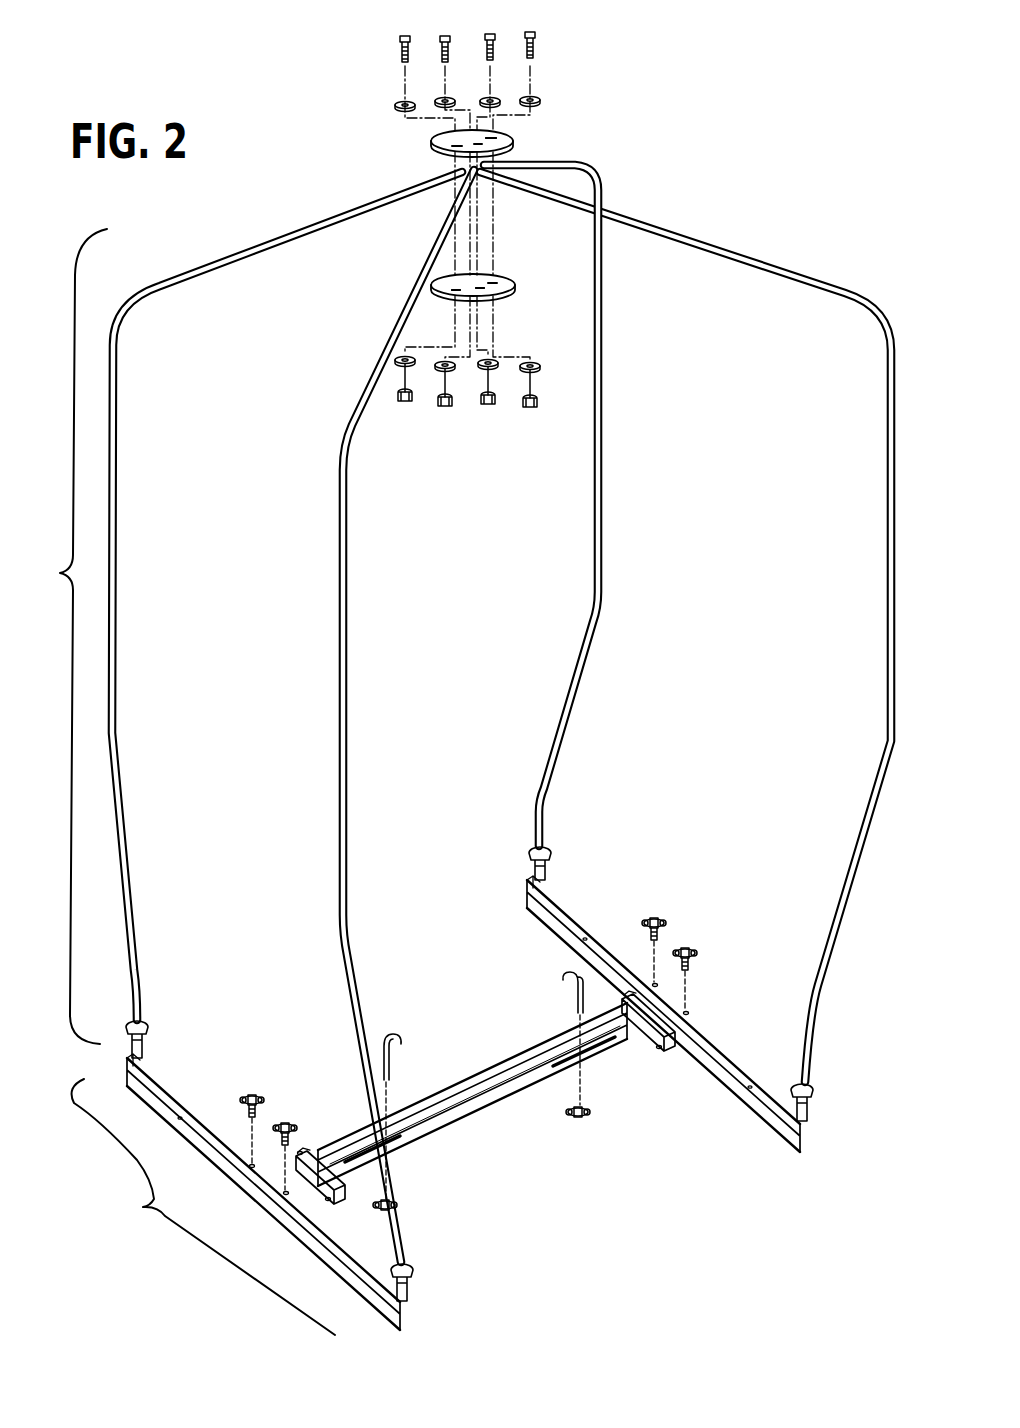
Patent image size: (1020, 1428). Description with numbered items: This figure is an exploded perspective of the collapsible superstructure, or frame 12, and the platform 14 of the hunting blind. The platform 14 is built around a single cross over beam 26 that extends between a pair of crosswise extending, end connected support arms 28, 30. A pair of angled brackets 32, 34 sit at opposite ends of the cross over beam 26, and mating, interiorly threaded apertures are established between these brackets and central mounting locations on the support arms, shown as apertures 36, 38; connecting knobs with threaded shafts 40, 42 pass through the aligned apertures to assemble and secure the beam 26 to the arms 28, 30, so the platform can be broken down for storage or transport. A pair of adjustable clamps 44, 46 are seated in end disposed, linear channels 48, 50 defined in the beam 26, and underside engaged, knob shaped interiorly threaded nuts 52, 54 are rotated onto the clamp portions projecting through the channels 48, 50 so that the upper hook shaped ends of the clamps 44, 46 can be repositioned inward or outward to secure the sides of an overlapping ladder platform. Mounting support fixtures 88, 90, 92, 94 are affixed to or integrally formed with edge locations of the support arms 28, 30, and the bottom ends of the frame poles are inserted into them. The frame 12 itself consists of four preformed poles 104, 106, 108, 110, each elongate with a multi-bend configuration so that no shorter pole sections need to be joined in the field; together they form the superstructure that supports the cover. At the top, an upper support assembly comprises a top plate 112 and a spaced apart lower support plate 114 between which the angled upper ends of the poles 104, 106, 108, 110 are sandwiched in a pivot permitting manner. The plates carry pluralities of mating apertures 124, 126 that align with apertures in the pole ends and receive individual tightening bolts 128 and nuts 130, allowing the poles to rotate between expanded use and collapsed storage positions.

The frame 12 is at (60, 573).
The platform 14 is at (203, 1207).
The cross over beam 26 is at (493, 1070).
The support arm 28 is at (170, 1085).
The support arm 30 is at (578, 912).
The angled bracket 32 is at (320, 1195).
The angled bracket 34 is at (670, 1043).
The aperture 36 is at (328, 1196).
The aperture 38 is at (686, 1012).
The connecting knob with threaded shaft 40 is at (284, 1122).
The connecting knob with threaded shaft 42 is at (687, 947).
The adjustable clamp 44 is at (392, 1040).
The adjustable clamp 46 is at (562, 984).
The channel 48 is at (400, 1147).
The channel 50 is at (610, 1053).
The interiorly threaded nut 52 is at (380, 1215).
The interiorly threaded nut 54 is at (575, 1125).
The mounting support fixture 88 is at (410, 1290).
The mounting support fixture 90 is at (150, 1048).
The mounting support fixture 92 is at (812, 1108).
The mounting support fixture 94 is at (550, 872).
The pole 104 is at (368, 378).
The pole 106 is at (270, 242).
The pole 108 is at (590, 160).
The pole 110 is at (743, 250).
The top plate 112 is at (440, 138).
The lower support plate 114 is at (503, 280).
The mating apertures 124 is at (515, 132).
The mating apertures 126 is at (473, 290).
The tightening bolts 128 is at (441, 50).
The nuts 130 is at (440, 100).